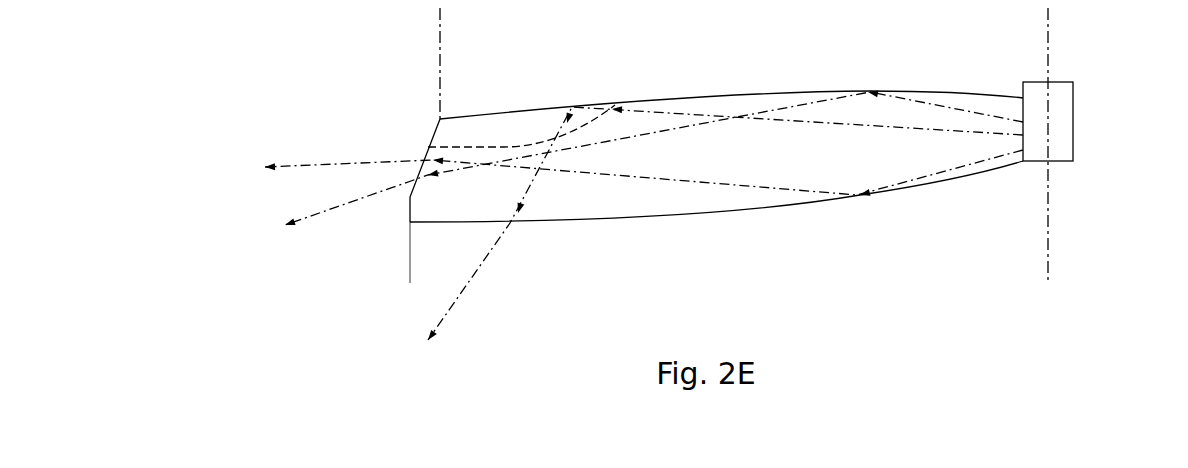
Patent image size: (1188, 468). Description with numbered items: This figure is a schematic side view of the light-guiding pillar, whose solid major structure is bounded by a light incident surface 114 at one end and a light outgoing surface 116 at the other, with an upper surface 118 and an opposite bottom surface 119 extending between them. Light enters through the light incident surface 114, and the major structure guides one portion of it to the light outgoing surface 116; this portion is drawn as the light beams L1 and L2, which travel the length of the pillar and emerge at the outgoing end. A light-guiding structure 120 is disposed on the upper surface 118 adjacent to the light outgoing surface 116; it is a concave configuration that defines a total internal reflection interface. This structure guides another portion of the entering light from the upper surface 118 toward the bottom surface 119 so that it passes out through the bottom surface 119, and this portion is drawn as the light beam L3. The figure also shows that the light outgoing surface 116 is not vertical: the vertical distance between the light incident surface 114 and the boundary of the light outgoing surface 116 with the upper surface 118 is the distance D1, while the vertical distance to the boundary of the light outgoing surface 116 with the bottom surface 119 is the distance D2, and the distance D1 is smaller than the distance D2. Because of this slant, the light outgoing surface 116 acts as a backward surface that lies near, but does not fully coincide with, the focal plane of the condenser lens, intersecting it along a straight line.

The light incident surface 114 is at (1075, 110).
The light outgoing surface 116 is at (683, 145).
The upper surface 118 is at (945, 92).
The bottom surface 119 is at (940, 185).
The light-guiding structure 120 is at (503, 147).
The light beam L1 is at (327, 160).
The light beam L2 is at (337, 204).
The light beam L3 is at (483, 258).
The distance D1 is at (440, 15).
The distance D2 is at (410, 273).